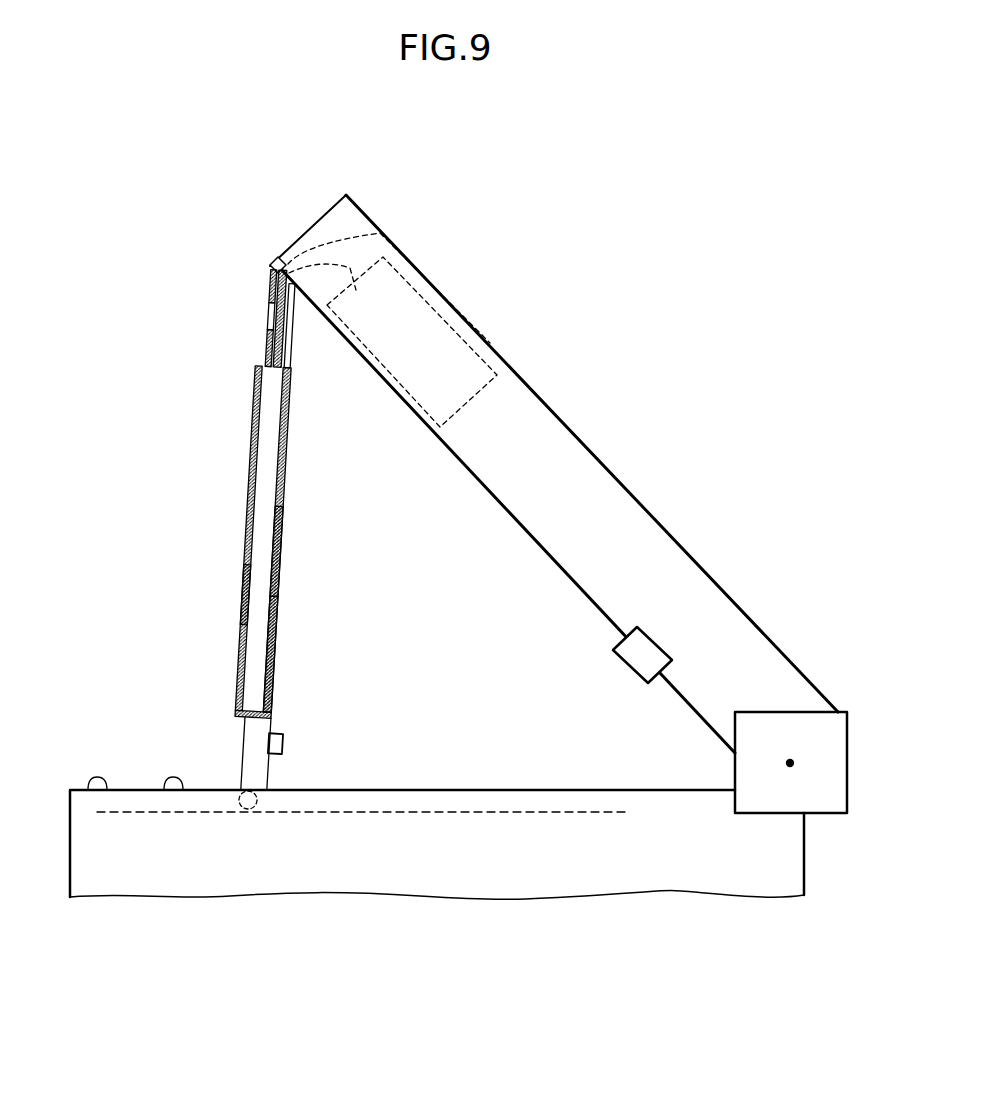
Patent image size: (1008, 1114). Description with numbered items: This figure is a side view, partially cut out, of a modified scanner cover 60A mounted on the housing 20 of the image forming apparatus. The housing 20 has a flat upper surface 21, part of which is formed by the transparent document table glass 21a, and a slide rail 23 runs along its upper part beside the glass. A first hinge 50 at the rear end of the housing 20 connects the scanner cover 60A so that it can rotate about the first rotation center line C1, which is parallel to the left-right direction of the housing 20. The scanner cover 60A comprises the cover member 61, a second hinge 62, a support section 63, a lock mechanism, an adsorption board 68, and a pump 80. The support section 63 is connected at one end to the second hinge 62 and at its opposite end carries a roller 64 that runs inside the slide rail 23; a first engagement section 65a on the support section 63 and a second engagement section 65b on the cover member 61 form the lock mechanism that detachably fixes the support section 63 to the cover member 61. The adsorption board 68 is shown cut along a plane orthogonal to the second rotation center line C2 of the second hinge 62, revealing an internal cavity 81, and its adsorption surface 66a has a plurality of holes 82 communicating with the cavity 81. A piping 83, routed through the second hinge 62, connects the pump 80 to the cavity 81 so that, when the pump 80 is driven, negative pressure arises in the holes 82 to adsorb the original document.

The housing 20 is at (803, 874).
The upper surface 21 is at (93, 790).
The document table glass 21a is at (166, 790).
The slide rail 23 is at (588, 814).
The first hinge 50 is at (838, 736).
The first rotation center line C1 is at (792, 763).
The second rotation center line C2 is at (283, 258).
The scanner cover 60A is at (554, 474).
The cover member 61 is at (600, 478).
The second hinge 62 is at (262, 291).
The support section 63 is at (296, 357).
The roller 64 is at (250, 809).
The first engagement section 65a is at (284, 744).
The second engagement section 65b is at (636, 664).
The adsorption surface 66a is at (240, 603).
The adsorption board 68 is at (280, 640).
The pump 80 is at (493, 342).
The cavity 81 is at (270, 548).
The hole 82 is at (254, 392).
The piping 83 is at (381, 233).